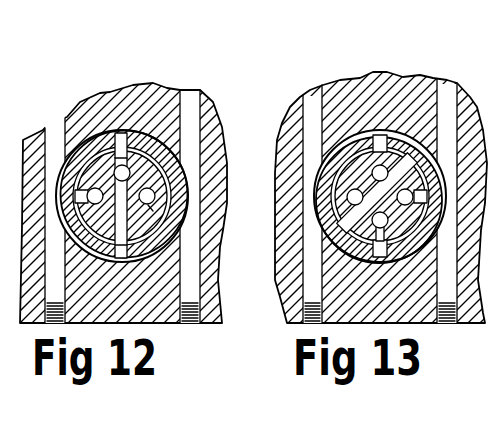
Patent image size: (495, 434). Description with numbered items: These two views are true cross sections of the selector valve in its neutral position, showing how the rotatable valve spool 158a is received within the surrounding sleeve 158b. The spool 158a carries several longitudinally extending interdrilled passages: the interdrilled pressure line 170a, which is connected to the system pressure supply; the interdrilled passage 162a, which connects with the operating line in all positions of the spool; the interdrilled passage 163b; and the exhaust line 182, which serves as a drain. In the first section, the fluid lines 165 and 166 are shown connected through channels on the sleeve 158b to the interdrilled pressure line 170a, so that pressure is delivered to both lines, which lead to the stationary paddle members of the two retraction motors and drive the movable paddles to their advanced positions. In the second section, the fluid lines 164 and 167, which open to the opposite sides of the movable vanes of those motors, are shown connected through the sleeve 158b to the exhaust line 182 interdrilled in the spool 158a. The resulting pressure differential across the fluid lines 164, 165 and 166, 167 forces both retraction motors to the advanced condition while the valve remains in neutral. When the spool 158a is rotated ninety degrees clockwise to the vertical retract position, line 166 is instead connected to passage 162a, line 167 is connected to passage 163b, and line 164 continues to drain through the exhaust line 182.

In FIG. 13, the valve spool 158a is at (340, 194).
In FIG. 12, the sleeve 158b is at (100, 135).
In FIG. 13, the sleeve 158b is at (303, 262).
In FIG. 12, the interdrilled passage 162a is at (96, 188).
In FIG. 13, the interdrilled passage 162a is at (340, 157).
In FIG. 12, the interdrilled passage 163b is at (156, 252).
In FIG. 13, the interdrilled passage 163b is at (424, 255).
In FIG. 13, the fluid line 164 is at (315, 92).
In FIG. 12, the fluid line 165 is at (47, 130).
In FIG. 12, the fluid line 166 is at (197, 90).
In FIG. 13, the fluid line 167 is at (447, 78).
In FIG. 12, the interdrilled pressure line 170a is at (126, 172).
In FIG. 13, the interdrilled pressure line 170a is at (398, 155).
In FIG. 13, the exhaust line 182 is at (338, 240).